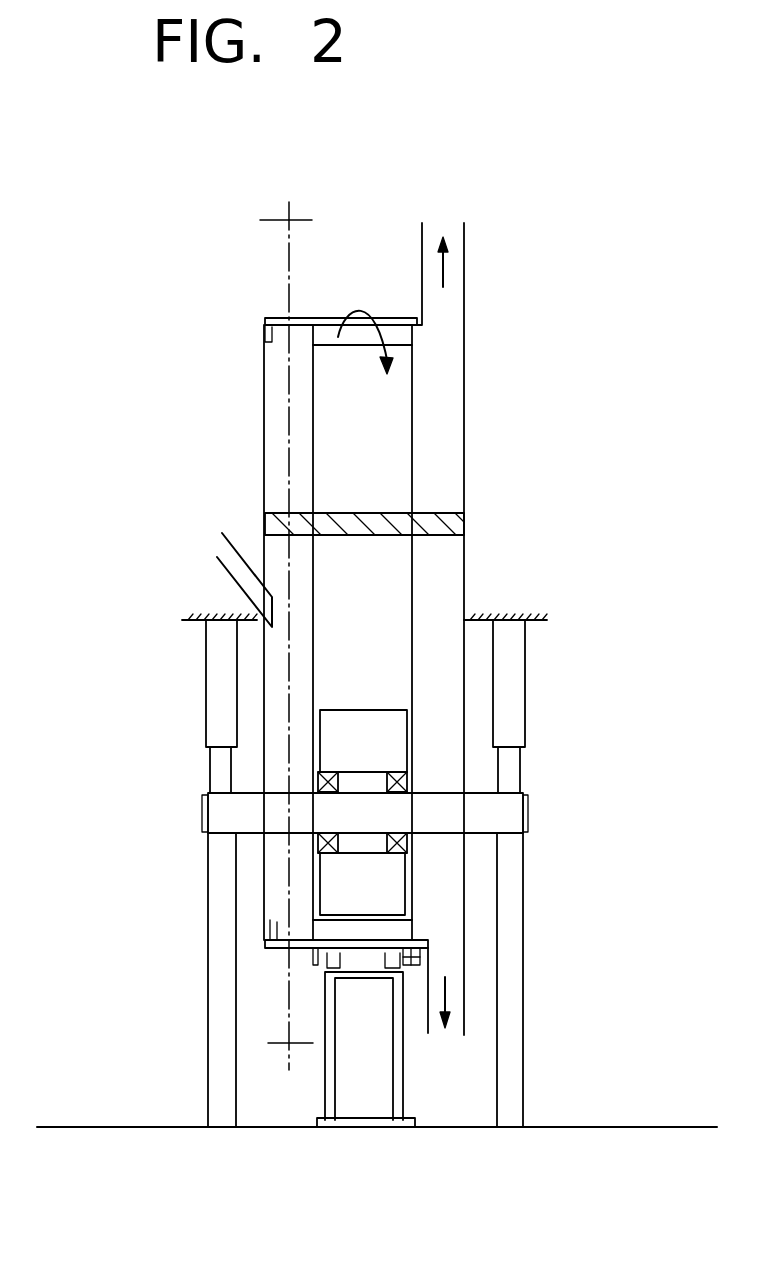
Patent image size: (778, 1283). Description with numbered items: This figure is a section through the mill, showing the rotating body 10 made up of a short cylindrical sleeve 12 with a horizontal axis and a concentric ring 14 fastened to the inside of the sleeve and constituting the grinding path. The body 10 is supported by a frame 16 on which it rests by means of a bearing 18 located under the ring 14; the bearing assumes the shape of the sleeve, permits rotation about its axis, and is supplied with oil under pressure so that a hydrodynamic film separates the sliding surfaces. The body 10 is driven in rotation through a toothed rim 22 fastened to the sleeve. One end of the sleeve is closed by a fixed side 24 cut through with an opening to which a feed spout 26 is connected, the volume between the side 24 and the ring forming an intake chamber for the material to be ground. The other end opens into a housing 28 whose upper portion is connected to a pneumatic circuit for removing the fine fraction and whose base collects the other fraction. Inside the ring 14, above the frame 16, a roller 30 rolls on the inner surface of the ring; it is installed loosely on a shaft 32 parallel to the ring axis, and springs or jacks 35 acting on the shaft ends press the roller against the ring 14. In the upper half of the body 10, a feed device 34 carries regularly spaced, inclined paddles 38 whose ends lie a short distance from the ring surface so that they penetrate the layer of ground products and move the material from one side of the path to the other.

The rotating body 10 is at (402, 317).
The cylindrical sleeve 12 is at (267, 320).
The ring 14 is at (405, 340).
The frame 16 is at (403, 1070).
The bearing 18 is at (430, 957).
The toothed rim 22 is at (290, 1000).
The fixed side 24 is at (263, 402).
The feed spout 26 is at (227, 573).
The housing 28 is at (465, 588).
The roller 30 is at (389, 723).
The shaft 32 is at (510, 817).
The device 34 is at (465, 520).
The springs or jacks 35 is at (216, 690).
The paddles 38 is at (267, 522).